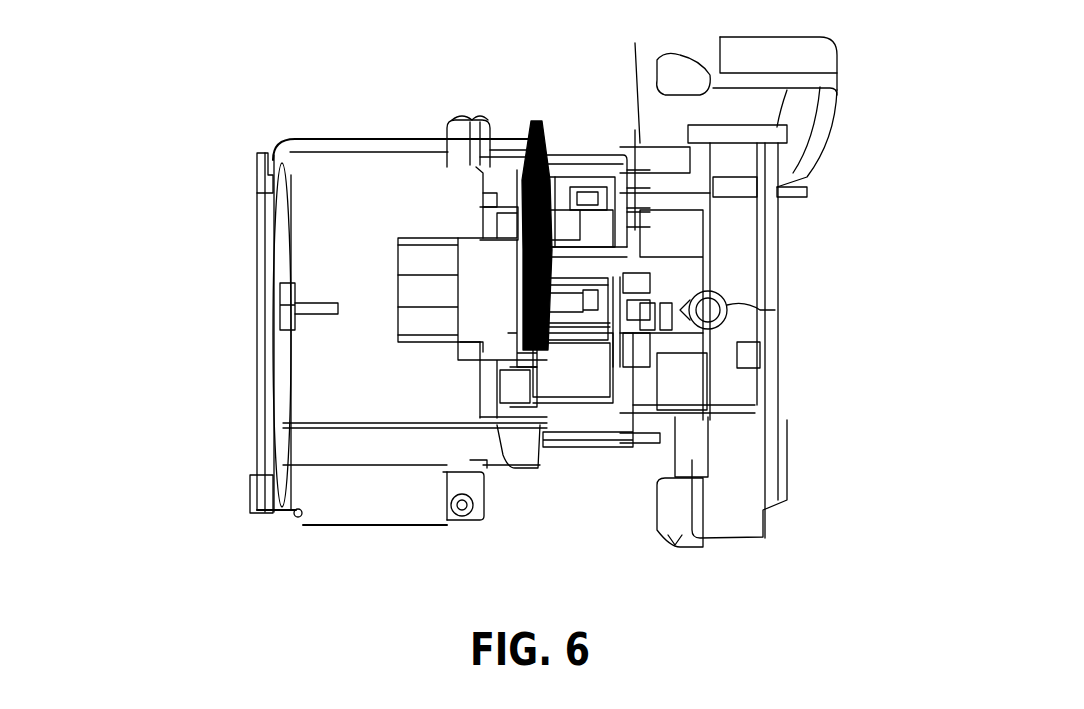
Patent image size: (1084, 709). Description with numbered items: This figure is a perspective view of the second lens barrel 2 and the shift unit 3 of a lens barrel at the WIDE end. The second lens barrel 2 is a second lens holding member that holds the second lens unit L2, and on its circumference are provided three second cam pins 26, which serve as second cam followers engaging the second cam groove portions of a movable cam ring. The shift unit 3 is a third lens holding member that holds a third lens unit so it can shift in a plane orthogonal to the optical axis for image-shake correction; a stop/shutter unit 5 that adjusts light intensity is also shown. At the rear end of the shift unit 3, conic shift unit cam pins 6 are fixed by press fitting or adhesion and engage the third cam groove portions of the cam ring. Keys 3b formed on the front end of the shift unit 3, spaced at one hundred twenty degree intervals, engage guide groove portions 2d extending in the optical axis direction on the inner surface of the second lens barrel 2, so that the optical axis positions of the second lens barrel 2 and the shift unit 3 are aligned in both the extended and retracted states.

The second lens barrel 2 is at (362, 135).
The second cam pin 26 is at (470, 118).
The stop/shutter unit 5 is at (539, 125).
The second lens unit L2 is at (267, 313).
The shift unit 3 is at (735, 255).
The shift unit cam pin 6 is at (735, 310).
The key 3b is at (500, 432).
The guide groove portion 2d is at (487, 378).